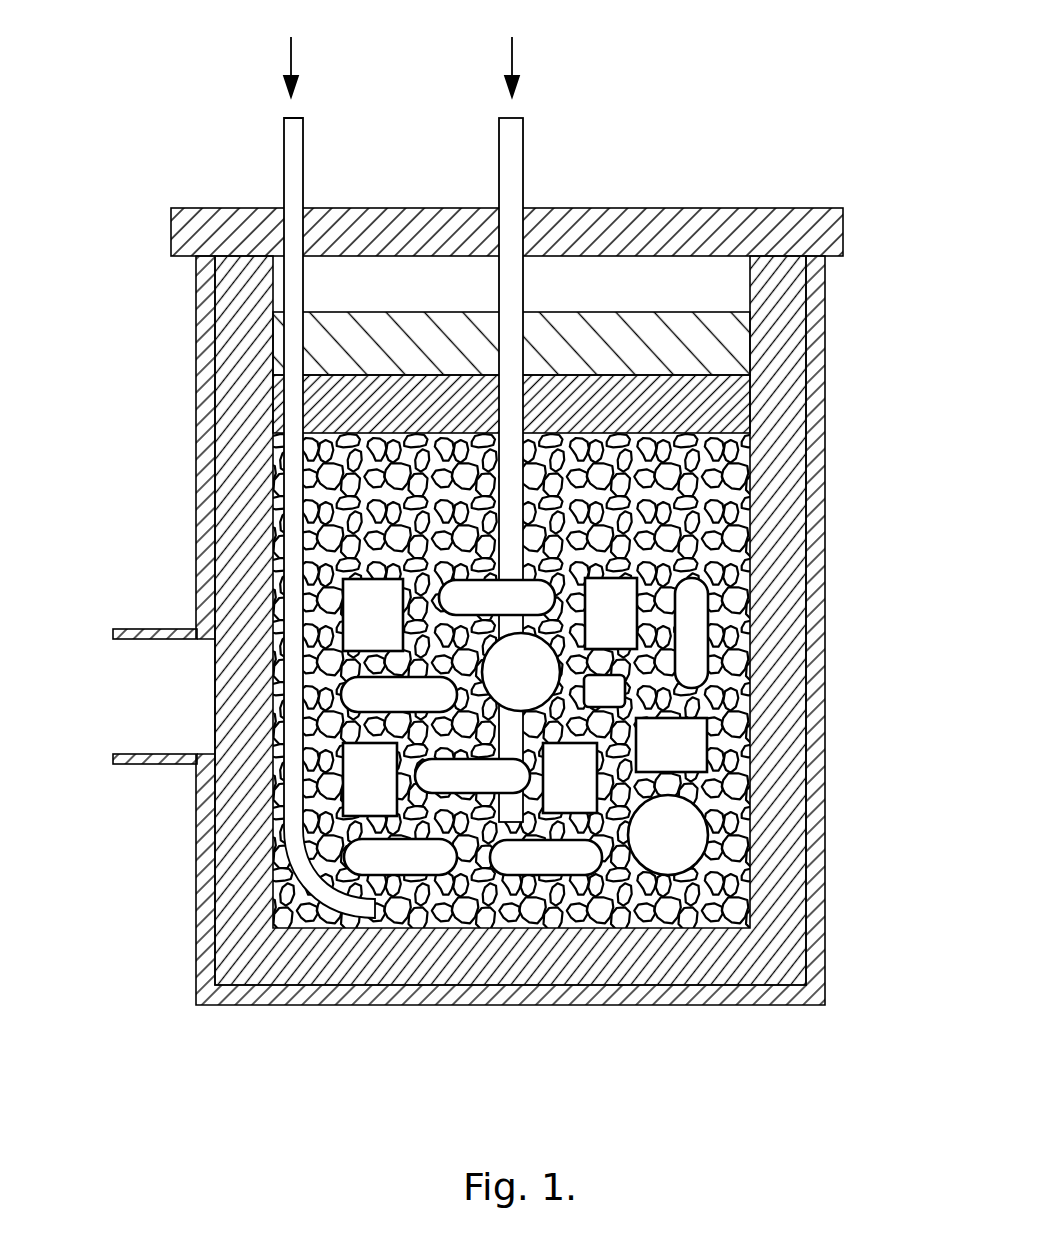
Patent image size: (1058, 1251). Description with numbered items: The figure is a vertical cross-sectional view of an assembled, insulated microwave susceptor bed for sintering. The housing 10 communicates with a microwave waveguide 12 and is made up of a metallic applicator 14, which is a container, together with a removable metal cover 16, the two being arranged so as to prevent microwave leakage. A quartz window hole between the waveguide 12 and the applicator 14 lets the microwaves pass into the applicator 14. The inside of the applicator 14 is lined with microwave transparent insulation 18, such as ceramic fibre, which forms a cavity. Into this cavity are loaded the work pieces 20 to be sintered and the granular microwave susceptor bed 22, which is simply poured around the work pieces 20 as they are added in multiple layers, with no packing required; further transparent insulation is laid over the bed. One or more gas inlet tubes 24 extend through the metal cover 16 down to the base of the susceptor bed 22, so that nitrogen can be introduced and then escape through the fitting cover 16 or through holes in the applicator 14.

The housing 10 is at (495, 545).
The microwave waveguide 12 is at (162, 764).
The metallic applicator 14 is at (820, 357).
The removable metal cover 16 is at (800, 207).
The microwave transparent insulation 18 is at (735, 399).
The work pieces 20 is at (658, 855).
The granular microwave susceptor bed 22 is at (740, 718).
The gas inlet tubes 24 is at (296, 163).